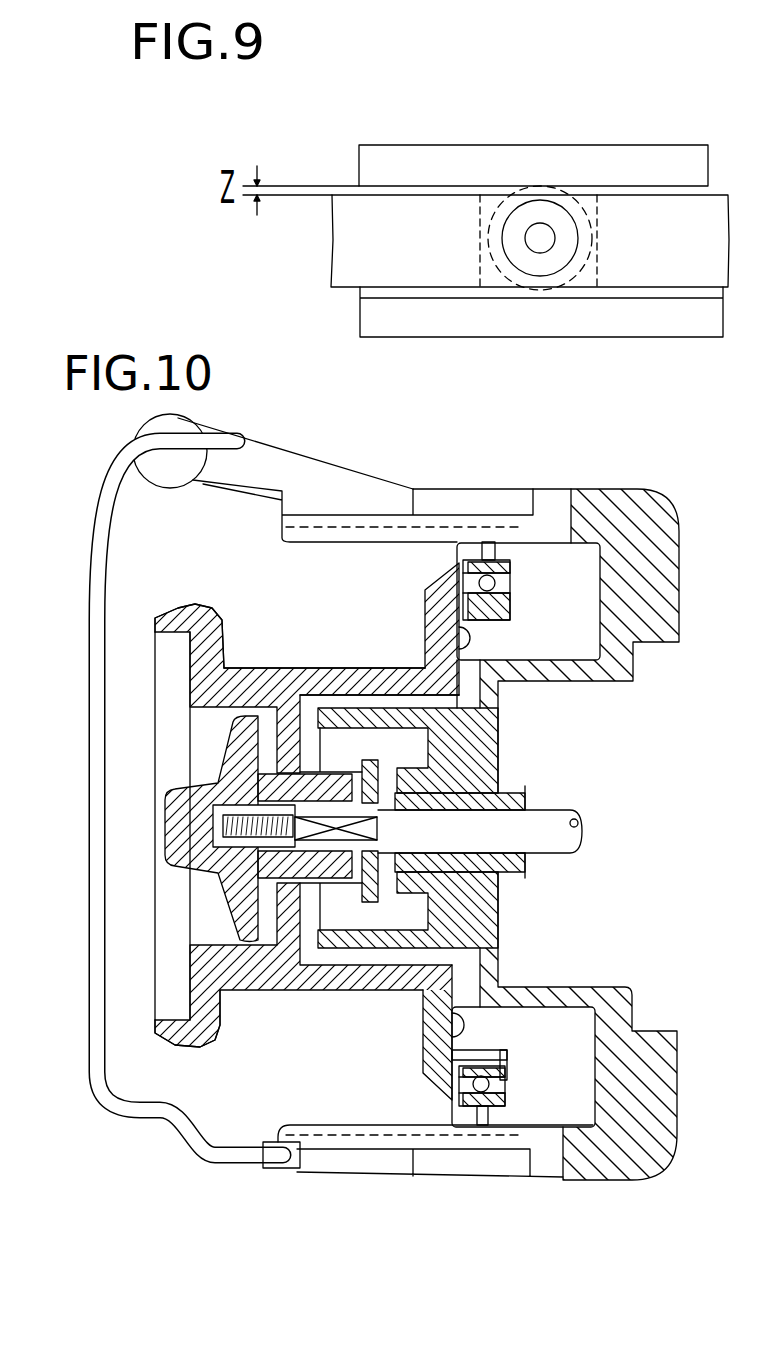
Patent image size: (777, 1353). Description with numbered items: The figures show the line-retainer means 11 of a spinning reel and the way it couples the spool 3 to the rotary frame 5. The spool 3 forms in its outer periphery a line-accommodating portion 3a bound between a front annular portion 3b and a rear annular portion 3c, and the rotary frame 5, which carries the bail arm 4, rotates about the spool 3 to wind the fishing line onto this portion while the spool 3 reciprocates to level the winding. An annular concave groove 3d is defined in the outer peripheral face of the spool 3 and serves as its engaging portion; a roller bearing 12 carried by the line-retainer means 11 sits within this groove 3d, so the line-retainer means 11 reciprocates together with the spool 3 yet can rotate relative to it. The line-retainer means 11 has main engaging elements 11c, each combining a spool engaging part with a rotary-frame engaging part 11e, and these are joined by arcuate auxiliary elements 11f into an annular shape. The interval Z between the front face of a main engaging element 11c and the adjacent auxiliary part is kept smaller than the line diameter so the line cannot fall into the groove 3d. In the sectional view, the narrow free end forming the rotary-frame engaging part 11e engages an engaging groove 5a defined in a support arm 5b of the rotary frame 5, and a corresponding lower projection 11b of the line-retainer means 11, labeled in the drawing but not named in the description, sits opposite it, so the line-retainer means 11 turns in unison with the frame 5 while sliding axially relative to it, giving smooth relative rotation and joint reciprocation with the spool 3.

In FIG. 10, the spool 3 is at (327, 986).
In FIG. 10, the line-accommodating portion 3a is at (323, 664).
In FIG. 10, the front annular portion 3b is at (222, 612).
In FIG. 9, the rear annular portion 3c is at (603, 158).
In FIG. 10, the rear annular portion 3c is at (426, 605).
In FIG. 9, the annular concave groove 3d is at (420, 226).
In FIG. 10, the bail arm 4 is at (88, 834).
In FIG. 10, the rotary frame 5 is at (318, 455).
In FIG. 10, the engaging groove 5a is at (292, 546).
In FIG. 10, the support arm 5b is at (362, 474).
In FIG. 10, the line-retainer means 11 is at (510, 571).
In FIG. 10, the bearing lower pin 11b is at (481, 1128).
In FIG. 9, the main engaging element 11c is at (493, 186).
In FIG. 10, the rotary-frame engaging part 11e is at (481, 556).
In FIG. 9, the arcuate auxiliary element 11f is at (655, 272).
In FIG. 9, the roller bearing 12 is at (540, 194).
In FIG. 10, the roller bearing 12 is at (497, 595).